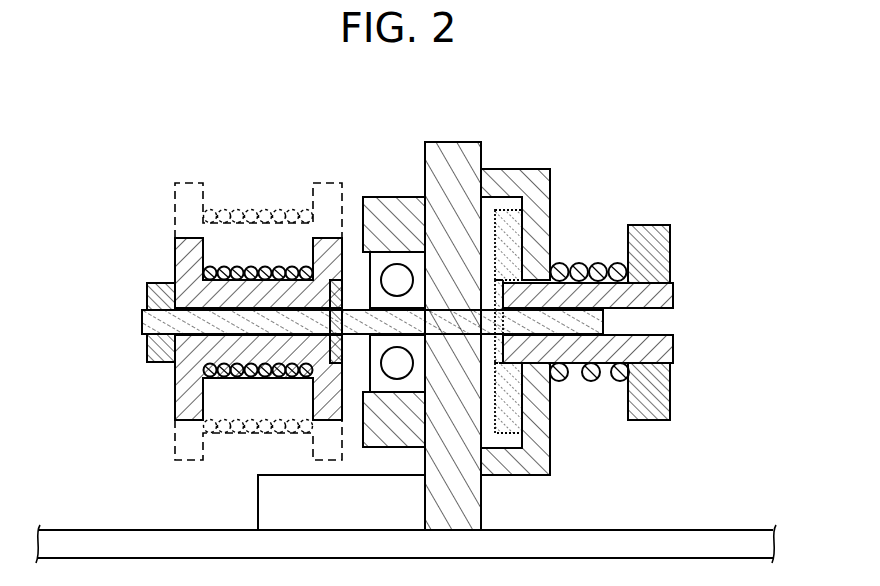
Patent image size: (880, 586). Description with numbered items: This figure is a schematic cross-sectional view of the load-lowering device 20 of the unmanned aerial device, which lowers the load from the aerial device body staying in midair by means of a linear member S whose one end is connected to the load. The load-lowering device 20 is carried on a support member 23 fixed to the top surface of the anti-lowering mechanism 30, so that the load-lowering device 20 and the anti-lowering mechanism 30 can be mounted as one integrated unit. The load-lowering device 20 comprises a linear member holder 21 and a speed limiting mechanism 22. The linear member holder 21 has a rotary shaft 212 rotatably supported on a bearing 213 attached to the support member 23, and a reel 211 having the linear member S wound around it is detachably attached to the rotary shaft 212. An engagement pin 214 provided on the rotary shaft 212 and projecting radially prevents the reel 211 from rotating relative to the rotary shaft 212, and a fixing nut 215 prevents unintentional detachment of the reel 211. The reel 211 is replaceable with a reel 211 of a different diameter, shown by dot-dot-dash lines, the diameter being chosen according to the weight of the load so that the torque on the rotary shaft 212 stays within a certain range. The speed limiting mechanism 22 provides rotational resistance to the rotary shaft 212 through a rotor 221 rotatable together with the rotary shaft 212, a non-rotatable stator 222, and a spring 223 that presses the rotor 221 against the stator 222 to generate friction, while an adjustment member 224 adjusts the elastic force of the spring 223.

The load-lowering device 20 is at (646, 148).
The linear member holder 21 is at (135, 178).
The reel 211 is at (175, 190).
The rotary shaft 212 is at (142, 316).
The bearing 213 is at (364, 376).
The engagement pin 214 is at (347, 290).
The fixing nut 215 is at (147, 350).
The linear member S is at (268, 265).
The speed limiting mechanism 22 is at (676, 178).
The rotor 221 is at (508, 210).
The stator 222 is at (552, 228).
The spring 223 is at (597, 262).
The adjustment member 224 is at (650, 420).
The support member 23 is at (425, 158).
The anti-lowering mechanism 30 is at (733, 530).